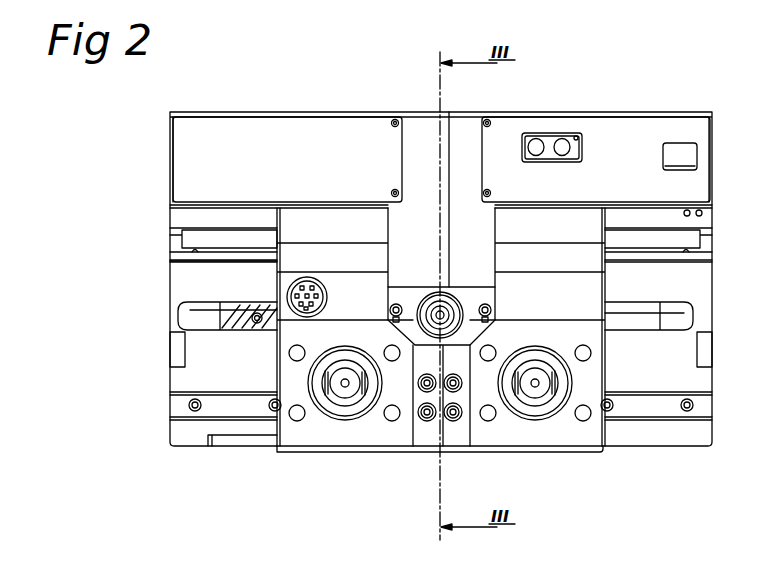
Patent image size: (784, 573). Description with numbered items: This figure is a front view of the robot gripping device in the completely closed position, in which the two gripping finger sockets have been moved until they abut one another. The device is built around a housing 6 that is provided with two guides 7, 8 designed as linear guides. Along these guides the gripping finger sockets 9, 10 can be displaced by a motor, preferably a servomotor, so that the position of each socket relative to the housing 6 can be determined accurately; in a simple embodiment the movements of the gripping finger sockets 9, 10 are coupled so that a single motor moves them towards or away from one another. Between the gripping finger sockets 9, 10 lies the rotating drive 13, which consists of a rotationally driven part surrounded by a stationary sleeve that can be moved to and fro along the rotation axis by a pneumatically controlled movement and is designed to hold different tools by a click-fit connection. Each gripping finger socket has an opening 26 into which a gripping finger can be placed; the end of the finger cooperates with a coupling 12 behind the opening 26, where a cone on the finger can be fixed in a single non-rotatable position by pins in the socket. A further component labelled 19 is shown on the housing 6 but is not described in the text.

The housing 6 is at (262, 135).
The guide 7 is at (705, 250).
The guide 8 is at (707, 405).
The gripping finger socket 9 is at (296, 447).
The gripping finger socket 10 is at (565, 430).
The coupling 12 is at (357, 402).
The rotating drive 13 is at (430, 288).
The electrical connector 19 is at (548, 133).
The opening 26 is at (327, 392).